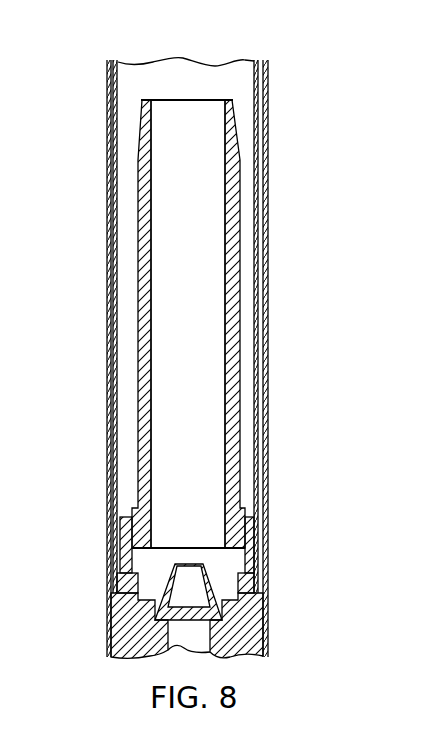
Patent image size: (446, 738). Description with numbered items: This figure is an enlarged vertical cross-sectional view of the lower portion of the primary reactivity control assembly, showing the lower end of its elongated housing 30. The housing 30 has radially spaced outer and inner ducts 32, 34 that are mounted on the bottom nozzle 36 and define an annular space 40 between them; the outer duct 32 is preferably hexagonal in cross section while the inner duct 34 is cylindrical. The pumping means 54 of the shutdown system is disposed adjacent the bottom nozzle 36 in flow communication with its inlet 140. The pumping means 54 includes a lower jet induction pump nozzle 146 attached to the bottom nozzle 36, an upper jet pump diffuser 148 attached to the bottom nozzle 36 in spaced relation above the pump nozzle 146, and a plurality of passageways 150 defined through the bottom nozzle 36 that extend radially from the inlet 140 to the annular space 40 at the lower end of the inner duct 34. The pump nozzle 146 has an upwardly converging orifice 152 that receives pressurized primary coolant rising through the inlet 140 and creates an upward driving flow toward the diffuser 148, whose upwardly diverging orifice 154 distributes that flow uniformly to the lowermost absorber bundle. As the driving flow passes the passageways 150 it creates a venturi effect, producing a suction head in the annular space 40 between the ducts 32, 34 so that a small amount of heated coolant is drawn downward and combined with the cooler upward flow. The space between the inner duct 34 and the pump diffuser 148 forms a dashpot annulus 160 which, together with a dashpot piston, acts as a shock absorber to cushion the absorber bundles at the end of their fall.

The housing 30 is at (270, 182).
The outer duct 32 is at (272, 217).
The inner duct 34 is at (262, 255).
The bottom nozzle 36 is at (266, 643).
The annular space 40 is at (108, 118).
The pumping means 54 is at (241, 378).
The inlet 140 is at (173, 656).
The lower jet induction pump nozzle 146 is at (162, 578).
The upper jet pump diffuser 148 is at (240, 422).
The passageways 150 is at (129, 592).
The upwardly converging orifice 152 is at (173, 596).
The upwardly diverging orifice 154 is at (220, 147).
The dashpot annulus 160 is at (247, 324).